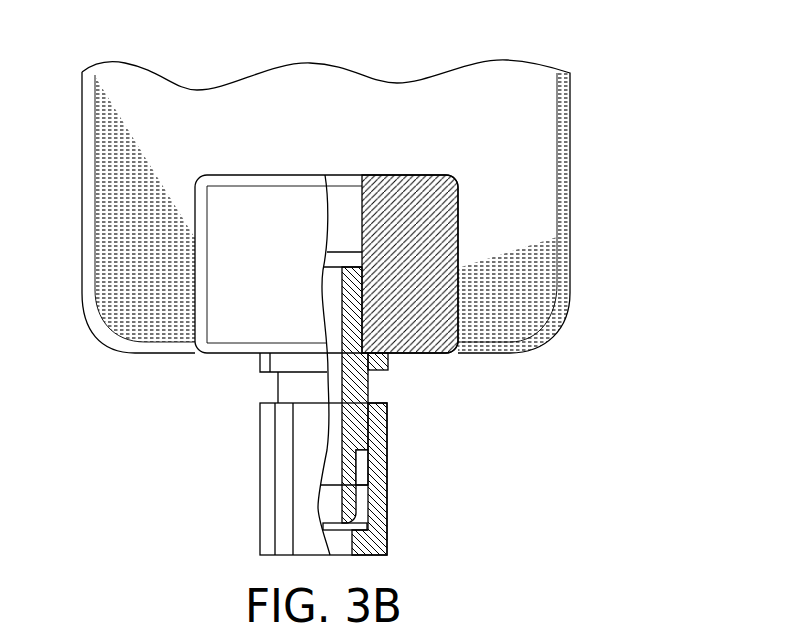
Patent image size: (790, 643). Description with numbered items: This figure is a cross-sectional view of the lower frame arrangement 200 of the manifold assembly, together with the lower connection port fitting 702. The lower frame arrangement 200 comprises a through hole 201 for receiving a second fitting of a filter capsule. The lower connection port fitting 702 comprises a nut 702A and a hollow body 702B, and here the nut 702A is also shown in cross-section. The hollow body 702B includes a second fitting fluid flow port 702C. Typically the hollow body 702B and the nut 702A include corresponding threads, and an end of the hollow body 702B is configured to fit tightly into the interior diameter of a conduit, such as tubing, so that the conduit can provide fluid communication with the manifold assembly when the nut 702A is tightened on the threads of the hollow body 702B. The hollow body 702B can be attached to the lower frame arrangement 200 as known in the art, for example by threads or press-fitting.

The lower frame arrangement 200 is at (472, 232).
The through hole 201 is at (347, 175).
The lower connection port fitting 702 is at (222, 471).
The nut 702A is at (268, 545).
The hollow body 702B is at (388, 374).
The second fitting fluid flow port 702C is at (323, 267).